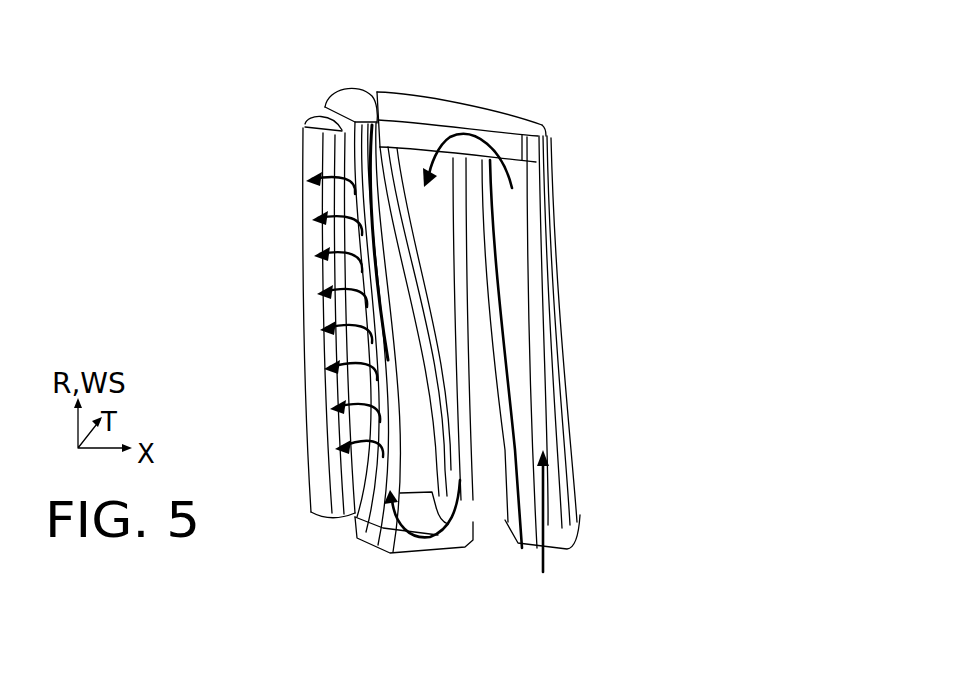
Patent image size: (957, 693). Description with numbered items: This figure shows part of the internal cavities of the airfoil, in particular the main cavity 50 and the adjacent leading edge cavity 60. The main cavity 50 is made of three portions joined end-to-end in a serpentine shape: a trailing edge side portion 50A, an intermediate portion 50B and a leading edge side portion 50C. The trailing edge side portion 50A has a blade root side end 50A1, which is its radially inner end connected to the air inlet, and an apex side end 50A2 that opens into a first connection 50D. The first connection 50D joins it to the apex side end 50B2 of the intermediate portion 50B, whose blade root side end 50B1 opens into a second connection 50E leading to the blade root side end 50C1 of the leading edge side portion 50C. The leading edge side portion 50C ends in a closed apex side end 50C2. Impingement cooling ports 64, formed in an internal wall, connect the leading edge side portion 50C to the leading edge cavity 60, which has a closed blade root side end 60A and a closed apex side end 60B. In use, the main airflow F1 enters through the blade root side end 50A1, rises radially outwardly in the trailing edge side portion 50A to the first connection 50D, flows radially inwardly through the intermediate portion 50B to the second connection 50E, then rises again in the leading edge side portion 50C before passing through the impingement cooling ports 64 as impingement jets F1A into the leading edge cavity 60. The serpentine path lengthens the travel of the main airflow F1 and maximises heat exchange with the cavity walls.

The main cavity 50 is at (574, 318).
The trailing edge side portion 50A is at (515, 235).
The blade root side end 50A1 is at (565, 551).
The apex side end 50A2 is at (516, 157).
The intermediate portion 50B is at (443, 282).
The blade root side end 50B1 is at (503, 558).
The apex side end 50B2 is at (420, 150).
The leading edge side portion 50C is at (387, 350).
The blade root side end 50C1 is at (368, 550).
The closed apex side end 50C2 is at (352, 106).
The first connection 50D is at (487, 124).
The second connection 50E is at (413, 550).
The leading edge cavity 60 is at (300, 287).
The closed blade root side end 60A is at (338, 520).
The apex side end 60B is at (322, 127).
The impingement cooling ports 64 is at (357, 442).
The main airflow F1 is at (508, 168).
The impingement jets F1A is at (318, 236).